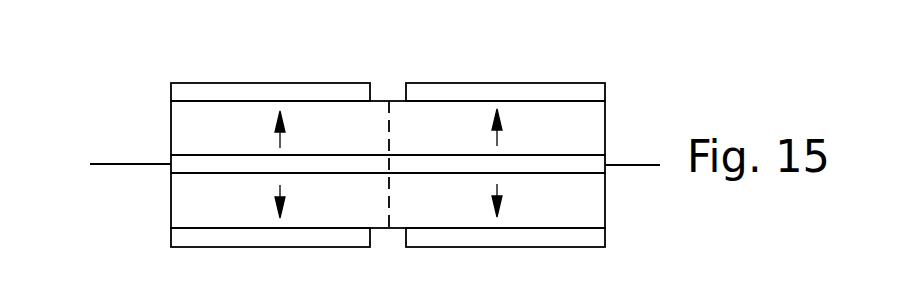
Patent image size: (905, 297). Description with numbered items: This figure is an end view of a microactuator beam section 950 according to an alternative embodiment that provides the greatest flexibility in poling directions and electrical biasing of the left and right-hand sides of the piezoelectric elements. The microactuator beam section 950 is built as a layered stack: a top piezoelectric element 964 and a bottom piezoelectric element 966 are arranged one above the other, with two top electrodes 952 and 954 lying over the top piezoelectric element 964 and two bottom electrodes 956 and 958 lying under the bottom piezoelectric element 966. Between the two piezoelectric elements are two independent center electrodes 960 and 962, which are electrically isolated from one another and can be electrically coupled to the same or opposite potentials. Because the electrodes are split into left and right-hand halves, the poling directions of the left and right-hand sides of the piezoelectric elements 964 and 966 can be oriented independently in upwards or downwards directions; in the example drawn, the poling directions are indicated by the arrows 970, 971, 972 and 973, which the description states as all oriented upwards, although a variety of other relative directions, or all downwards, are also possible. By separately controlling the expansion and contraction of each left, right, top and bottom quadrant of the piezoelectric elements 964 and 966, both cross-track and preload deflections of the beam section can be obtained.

The microactuator beam section 950 is at (134, 83).
The top electrode 952 is at (532, 83).
The top electrode 954 is at (235, 83).
The bottom electrode 956 is at (560, 247).
The bottom electrode 958 is at (207, 247).
The center electrode 960 is at (620, 165).
The center electrode 962 is at (171, 163).
The top piezoelectric element 964 is at (171, 127).
The bottom piezoelectric element 966 is at (171, 202).
The arrow 970 is at (282, 145).
The arrow 971 is at (499, 143).
The arrow 972 is at (282, 187).
The arrow 973 is at (499, 186).